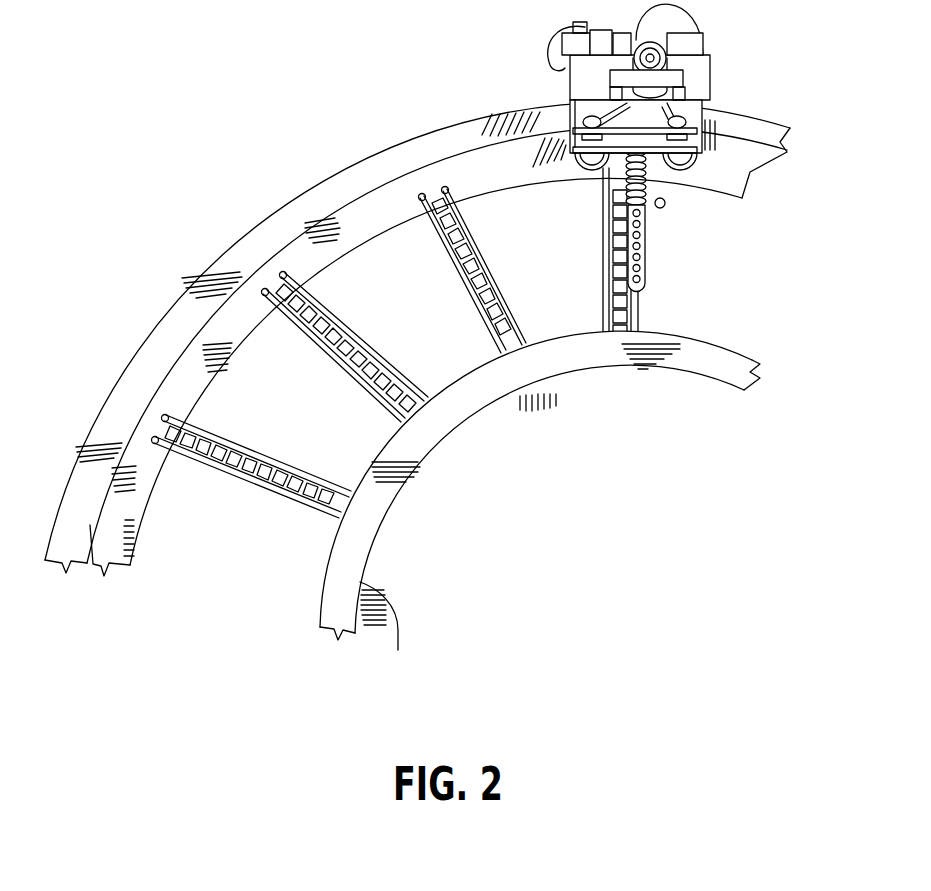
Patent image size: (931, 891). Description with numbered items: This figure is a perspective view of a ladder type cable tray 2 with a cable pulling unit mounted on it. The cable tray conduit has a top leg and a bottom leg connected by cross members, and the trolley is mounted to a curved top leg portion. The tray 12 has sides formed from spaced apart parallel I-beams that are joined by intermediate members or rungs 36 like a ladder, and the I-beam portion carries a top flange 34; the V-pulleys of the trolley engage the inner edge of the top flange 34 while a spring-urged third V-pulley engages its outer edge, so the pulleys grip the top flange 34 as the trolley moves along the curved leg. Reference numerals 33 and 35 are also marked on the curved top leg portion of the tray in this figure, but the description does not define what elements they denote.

The ladder type cable tray 2 is at (487, 510).
The tray 12 is at (762, 172).
The lower surface of ring 33 is at (398, 650).
The top flange 34 is at (463, 418).
The outer surface of ring 35 is at (318, 594).
The rungs 36 is at (257, 485).